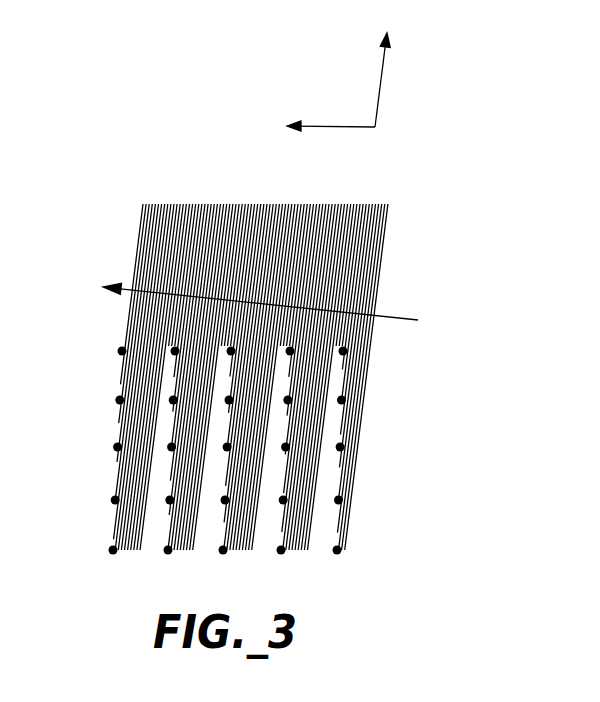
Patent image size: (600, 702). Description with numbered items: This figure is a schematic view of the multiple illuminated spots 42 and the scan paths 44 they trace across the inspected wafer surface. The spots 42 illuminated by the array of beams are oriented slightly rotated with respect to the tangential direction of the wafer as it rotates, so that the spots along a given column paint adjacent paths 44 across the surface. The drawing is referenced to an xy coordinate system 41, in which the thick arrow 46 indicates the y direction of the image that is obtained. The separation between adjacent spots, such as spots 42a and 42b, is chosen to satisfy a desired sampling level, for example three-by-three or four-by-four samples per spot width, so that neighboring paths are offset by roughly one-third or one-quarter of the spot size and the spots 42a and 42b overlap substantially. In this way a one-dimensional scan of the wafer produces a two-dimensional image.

The xy coordinate system 41 is at (376, 143).
The spots 42 is at (224, 433).
The spot 42a is at (119, 349).
The spot 42b is at (117, 398).
The scan paths 44 is at (383, 253).
The thick arrow 46 is at (390, 317).